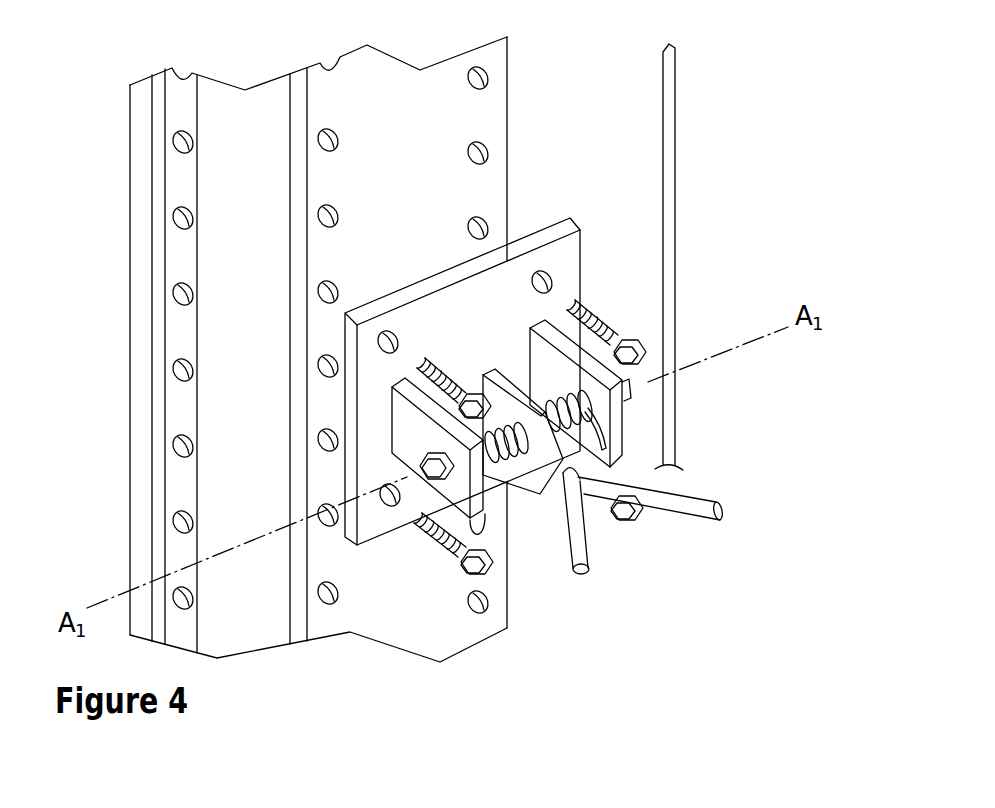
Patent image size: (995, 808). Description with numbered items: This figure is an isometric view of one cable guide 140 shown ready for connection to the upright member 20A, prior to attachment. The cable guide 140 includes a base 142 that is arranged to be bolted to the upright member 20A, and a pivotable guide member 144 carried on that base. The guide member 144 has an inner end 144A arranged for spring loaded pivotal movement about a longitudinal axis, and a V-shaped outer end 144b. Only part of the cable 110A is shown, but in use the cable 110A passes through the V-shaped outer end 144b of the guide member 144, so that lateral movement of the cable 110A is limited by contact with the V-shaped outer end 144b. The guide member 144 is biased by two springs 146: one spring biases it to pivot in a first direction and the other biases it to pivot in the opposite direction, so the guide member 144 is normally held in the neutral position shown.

The upright member 20A is at (393, 143).
The cable guide 140 is at (539, 212).
The base 142 is at (383, 522).
The guide member 144 is at (543, 512).
The inner end 144A is at (556, 322).
The V-shaped outer end 144b is at (712, 490).
The springs 146 is at (608, 418).
The cable 110A is at (677, 128).